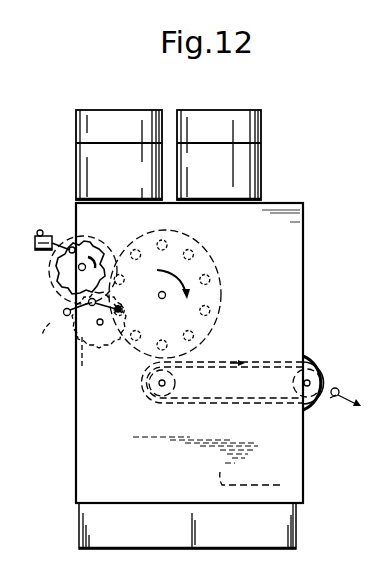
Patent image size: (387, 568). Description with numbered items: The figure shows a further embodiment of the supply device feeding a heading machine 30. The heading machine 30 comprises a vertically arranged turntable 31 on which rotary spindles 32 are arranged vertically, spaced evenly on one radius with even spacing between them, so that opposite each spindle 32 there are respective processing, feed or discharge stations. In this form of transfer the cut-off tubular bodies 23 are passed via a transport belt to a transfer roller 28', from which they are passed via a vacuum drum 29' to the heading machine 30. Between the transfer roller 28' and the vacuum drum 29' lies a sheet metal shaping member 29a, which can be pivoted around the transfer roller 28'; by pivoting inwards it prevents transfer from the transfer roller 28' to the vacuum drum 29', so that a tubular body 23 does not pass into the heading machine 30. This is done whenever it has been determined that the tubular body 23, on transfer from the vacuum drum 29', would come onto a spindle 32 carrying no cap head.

The cut-off tubular body 23 is at (40, 230).
The transfer roller 28' is at (77, 317).
The vacuum drum 29' is at (85, 334).
The sheet metal shaping member 29a is at (75, 237).
The heading machine 30 is at (312, 438).
The turntable 31 is at (222, 274).
The rotary spindle 32 is at (162, 240).